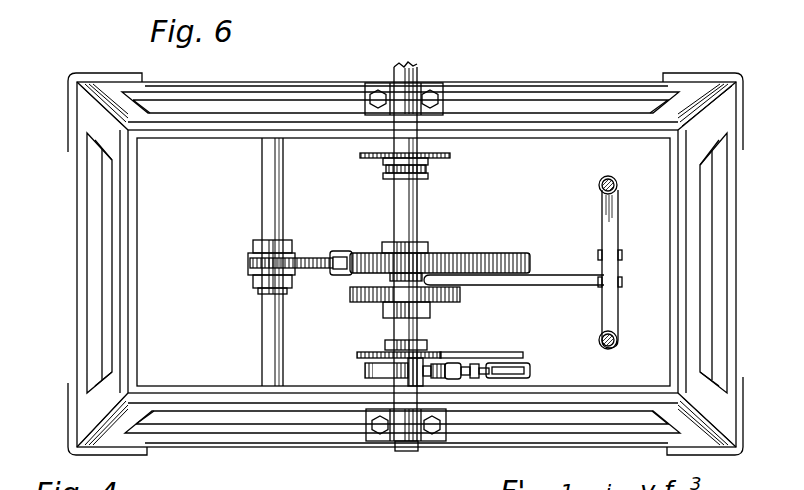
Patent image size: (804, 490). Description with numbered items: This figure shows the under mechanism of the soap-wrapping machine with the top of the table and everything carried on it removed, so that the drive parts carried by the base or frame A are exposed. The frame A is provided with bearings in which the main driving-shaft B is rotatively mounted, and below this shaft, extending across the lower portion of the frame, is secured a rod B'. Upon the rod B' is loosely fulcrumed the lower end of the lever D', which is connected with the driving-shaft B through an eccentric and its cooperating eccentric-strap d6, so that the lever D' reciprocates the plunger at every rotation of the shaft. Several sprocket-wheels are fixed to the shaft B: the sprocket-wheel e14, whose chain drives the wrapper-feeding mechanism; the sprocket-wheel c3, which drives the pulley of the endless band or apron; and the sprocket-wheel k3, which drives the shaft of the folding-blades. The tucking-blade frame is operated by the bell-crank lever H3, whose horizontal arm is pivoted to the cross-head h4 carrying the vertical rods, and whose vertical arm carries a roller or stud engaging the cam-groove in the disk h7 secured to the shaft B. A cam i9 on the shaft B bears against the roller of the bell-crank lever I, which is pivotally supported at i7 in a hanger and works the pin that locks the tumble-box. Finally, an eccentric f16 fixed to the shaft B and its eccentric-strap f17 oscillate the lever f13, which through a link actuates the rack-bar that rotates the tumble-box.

The base or frame A is at (92, 271).
The main driving-shaft B is at (384, 262).
The rod B' is at (254, 262).
The lever D' is at (274, 267).
The eccentric-strap d6 is at (464, 256).
The sprocket-wheel e14 is at (448, 155).
The sprocket-wheel k3 is at (384, 176).
The sprocket-wheel c3 is at (430, 169).
The bell-crank lever H3 is at (545, 280).
The grooved disk h7 is at (352, 292).
The cross-head h4 is at (610, 300).
The cam i9 is at (380, 348).
The bell-crank lever I is at (524, 351).
The eccentric f16 is at (366, 365).
The eccentric-strap f17 is at (365, 375).
The pivot i7 is at (424, 360).
The lever f13 is at (528, 374).